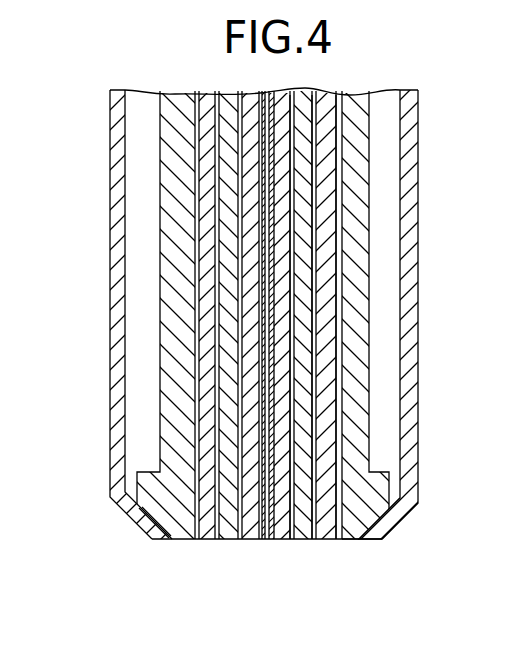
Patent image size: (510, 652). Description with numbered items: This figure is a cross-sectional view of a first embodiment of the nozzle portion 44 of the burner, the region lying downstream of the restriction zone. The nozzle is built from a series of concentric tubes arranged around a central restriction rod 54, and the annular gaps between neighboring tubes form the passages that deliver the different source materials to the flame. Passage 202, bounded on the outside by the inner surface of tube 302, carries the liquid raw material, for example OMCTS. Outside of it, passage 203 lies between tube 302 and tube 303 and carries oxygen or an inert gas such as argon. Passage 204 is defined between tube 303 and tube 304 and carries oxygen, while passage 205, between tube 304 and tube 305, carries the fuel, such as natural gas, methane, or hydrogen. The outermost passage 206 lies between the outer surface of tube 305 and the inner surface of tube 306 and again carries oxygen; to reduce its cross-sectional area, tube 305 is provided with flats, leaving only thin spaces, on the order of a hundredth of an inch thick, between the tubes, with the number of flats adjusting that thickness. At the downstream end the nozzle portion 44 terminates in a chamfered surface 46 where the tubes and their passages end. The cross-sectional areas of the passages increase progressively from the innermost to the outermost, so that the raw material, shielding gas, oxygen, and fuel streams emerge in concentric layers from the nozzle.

The nozzle portion of burner 44 is at (80, 455).
The chamfered surface of nozzle 46 is at (394, 525).
The restriction rod 54 is at (263, 324).
The passage 202 is at (270, 540).
The passage 203 is at (290, 539).
The passage 204 is at (318, 539).
The passage 205 is at (342, 539).
The passage 206 is at (362, 540).
The tube 302 is at (280, 446).
The tube 303 is at (303, 142).
The tube 304 is at (325, 230).
The tube 305 is at (360, 298).
The tube 306 is at (415, 390).